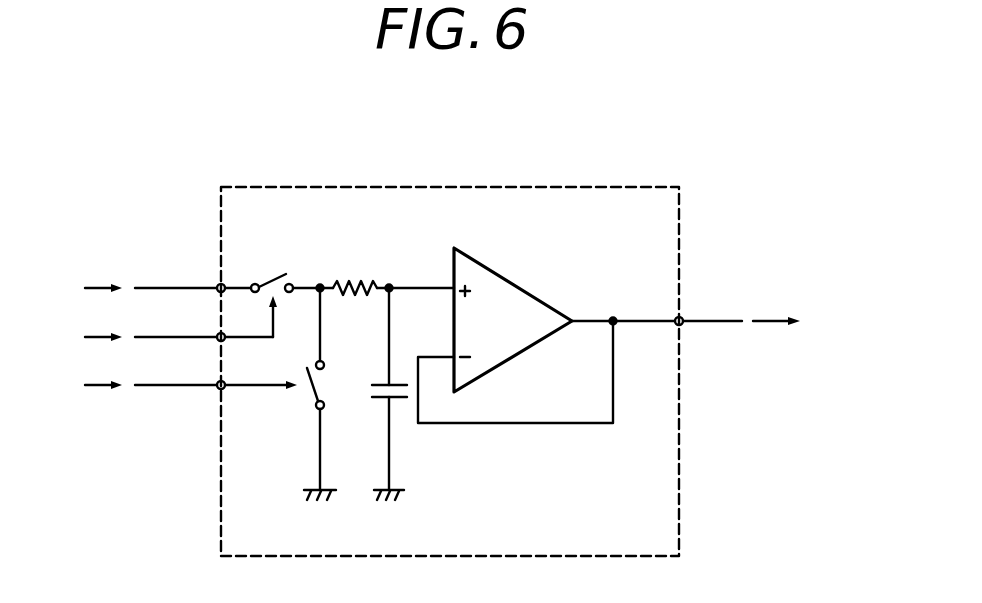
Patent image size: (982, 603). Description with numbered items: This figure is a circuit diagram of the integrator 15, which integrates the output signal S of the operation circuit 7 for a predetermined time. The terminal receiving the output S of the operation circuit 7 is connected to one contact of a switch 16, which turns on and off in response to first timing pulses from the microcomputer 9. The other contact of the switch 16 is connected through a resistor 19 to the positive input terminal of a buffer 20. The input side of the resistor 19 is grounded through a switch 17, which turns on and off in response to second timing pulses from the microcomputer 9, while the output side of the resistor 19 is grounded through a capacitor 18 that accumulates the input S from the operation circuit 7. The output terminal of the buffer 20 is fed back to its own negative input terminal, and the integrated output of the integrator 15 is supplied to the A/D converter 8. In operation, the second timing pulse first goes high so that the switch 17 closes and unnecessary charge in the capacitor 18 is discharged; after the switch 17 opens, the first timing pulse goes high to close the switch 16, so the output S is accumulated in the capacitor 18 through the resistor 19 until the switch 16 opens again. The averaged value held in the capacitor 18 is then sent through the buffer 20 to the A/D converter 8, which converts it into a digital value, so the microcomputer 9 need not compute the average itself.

The operation circuit 7 is at (142, 281).
The A/D converter 8 is at (700, 330).
The microcomputer 9 is at (178, 348).
The integrator 15 is at (565, 182).
The switch 16 is at (272, 272).
The switch 17 is at (310, 393).
The capacitor 18 is at (382, 405).
The resistor 19 is at (362, 280).
The buffer 20 is at (520, 285).